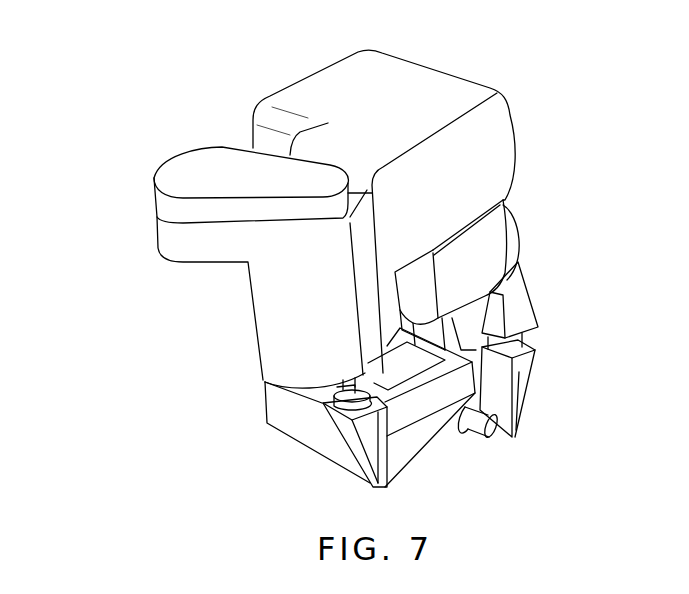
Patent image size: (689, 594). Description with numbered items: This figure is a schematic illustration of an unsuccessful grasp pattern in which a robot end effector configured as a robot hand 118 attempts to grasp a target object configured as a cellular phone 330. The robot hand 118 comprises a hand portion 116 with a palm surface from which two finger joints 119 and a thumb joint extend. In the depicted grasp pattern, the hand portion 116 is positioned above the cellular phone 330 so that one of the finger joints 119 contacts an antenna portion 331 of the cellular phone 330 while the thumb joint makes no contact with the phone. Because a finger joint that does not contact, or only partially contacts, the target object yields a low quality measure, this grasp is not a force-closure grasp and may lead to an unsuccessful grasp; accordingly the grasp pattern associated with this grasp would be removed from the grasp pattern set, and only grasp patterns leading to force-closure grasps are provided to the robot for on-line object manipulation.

The hand portion 116 is at (513, 114).
The robot hand 118 is at (155, 281).
The finger joints 119 is at (366, 486).
The cellular phone 330 is at (259, 432).
The antenna portion 331 is at (489, 441).